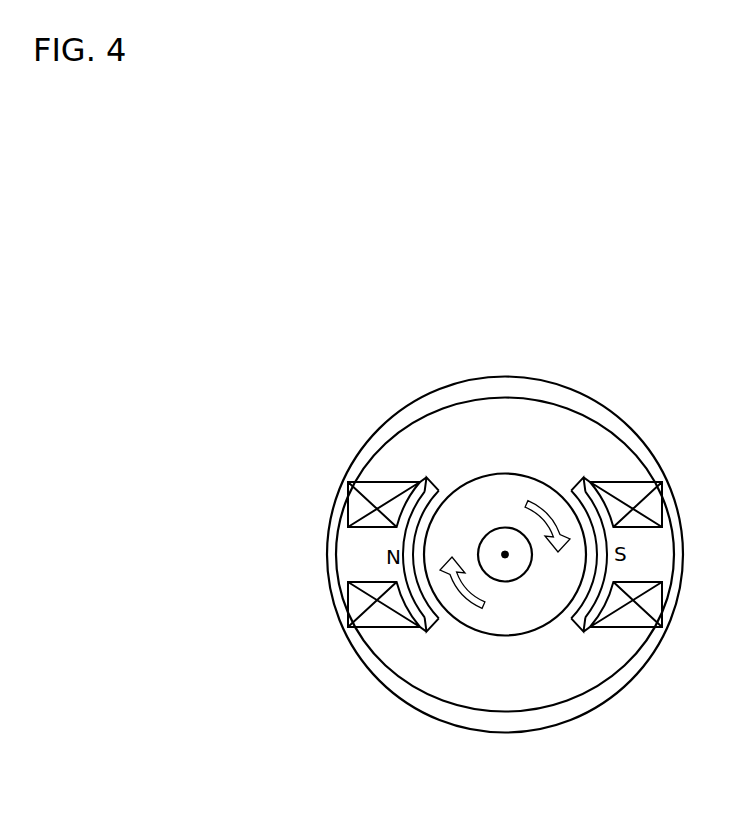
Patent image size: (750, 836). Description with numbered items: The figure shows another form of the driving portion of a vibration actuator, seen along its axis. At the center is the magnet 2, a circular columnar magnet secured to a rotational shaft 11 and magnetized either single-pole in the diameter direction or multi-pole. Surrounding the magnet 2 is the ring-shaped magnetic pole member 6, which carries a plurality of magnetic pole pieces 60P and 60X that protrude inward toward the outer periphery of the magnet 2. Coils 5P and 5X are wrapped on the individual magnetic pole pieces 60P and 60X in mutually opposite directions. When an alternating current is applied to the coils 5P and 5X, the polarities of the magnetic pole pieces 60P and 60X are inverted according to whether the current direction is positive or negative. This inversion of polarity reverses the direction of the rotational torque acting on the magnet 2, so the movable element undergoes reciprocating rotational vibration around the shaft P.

The magnet 2 is at (536, 478).
The magnetic pole member 6 is at (657, 455).
The rotational shaft 11 is at (505, 556).
The coil 5X is at (382, 629).
The coil 5P is at (625, 629).
The magnetic pole piece 60X is at (427, 634).
The magnetic pole piece 60P is at (583, 634).
The shaft P is at (505, 556).